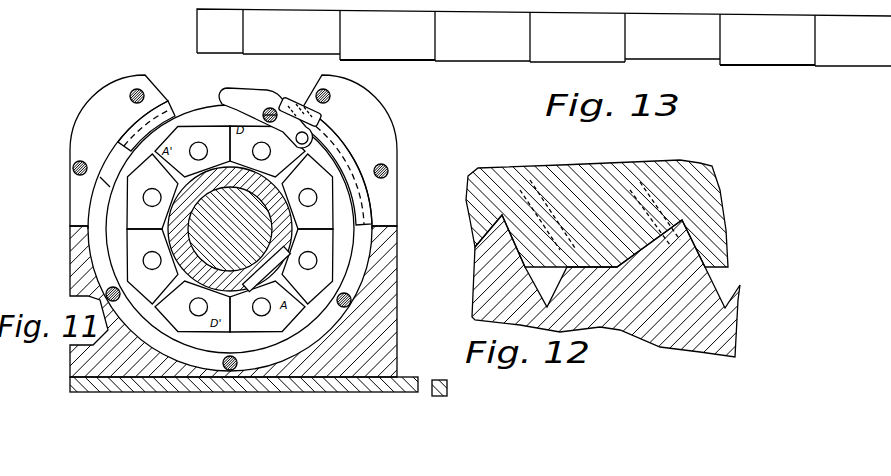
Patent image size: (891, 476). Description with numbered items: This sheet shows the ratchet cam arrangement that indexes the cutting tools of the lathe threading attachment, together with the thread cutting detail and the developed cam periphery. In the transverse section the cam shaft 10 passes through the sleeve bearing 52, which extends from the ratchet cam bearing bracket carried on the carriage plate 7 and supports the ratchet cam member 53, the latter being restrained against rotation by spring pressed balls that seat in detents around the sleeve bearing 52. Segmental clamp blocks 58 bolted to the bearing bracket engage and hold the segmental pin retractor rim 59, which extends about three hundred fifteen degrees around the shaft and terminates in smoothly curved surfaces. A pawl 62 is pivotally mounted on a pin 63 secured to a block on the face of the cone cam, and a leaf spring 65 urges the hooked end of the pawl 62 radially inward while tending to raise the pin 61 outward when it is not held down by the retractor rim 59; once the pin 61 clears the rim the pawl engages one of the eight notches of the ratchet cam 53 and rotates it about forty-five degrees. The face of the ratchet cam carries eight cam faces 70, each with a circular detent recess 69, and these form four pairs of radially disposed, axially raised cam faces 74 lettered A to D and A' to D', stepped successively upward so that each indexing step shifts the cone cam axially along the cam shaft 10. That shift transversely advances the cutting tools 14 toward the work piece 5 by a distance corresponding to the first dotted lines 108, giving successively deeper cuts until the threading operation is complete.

In FIG. 12, the work piece 5 is at (702, 182).
In FIG. 11, the carriage plate 7 is at (412, 378).
In FIG. 11, the cam shaft 10 is at (211, 198).
In FIG. 12, the cutting tools 14 is at (696, 275).
In FIG. 11, the sleeve bearing 52 is at (148, 246).
In FIG. 11, the ratchet cam member 53 is at (120, 198).
In FIG. 11, the segmental clamp blocks 58 is at (113, 84).
In FIG. 11, the segmental pin retractor rim 59 is at (138, 124).
In FIG. 11, the pin 61 is at (307, 134).
In FIG. 11, the pawl 62 is at (248, 102).
In FIG. 11, the pin 63 is at (274, 100).
In FIG. 11, the leaf spring 65 is at (234, 89).
In FIG. 11, the circular detent recesses 69 is at (334, 202).
In FIG. 11, the cam faces 70 is at (329, 253).
In FIG. 11, the cam faces 74 is at (305, 277).
In FIG. 13, the cam faces 74 is at (535, 62).
In FIG. 12, the first dotted lines 108 is at (690, 226).